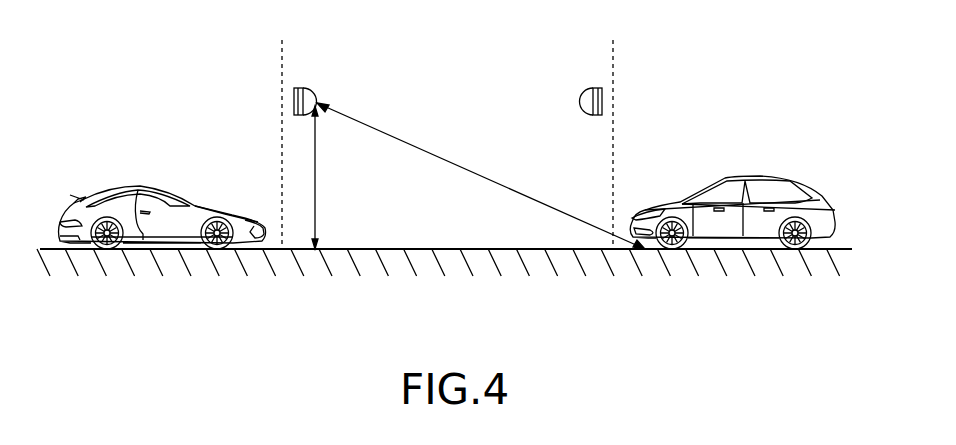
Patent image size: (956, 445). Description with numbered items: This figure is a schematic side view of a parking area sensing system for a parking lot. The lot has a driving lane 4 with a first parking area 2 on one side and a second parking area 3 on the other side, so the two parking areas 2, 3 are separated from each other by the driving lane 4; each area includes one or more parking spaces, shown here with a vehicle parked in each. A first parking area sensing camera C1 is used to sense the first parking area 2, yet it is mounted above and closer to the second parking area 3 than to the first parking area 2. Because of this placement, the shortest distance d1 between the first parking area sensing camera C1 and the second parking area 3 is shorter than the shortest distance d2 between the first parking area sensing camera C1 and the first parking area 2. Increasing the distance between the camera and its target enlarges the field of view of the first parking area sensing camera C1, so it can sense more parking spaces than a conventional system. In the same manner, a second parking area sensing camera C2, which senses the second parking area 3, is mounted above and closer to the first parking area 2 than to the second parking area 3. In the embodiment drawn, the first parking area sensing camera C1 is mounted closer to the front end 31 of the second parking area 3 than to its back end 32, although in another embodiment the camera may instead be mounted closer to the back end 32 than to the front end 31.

The first parking area 2 is at (745, 118).
The second parking area 3 is at (150, 118).
The driving lane 4 is at (453, 118).
The front end of the second parking area 31 is at (275, 251).
The back end of the second parking area 32 is at (53, 251).
The first parking area sensing camera C1 is at (310, 88).
The second parking area sensing camera C2 is at (585, 88).
The shortest distance between the first camera and the second parking area d1 is at (315, 205).
The shortest distance between the first camera and the first parking area d2 is at (560, 212).